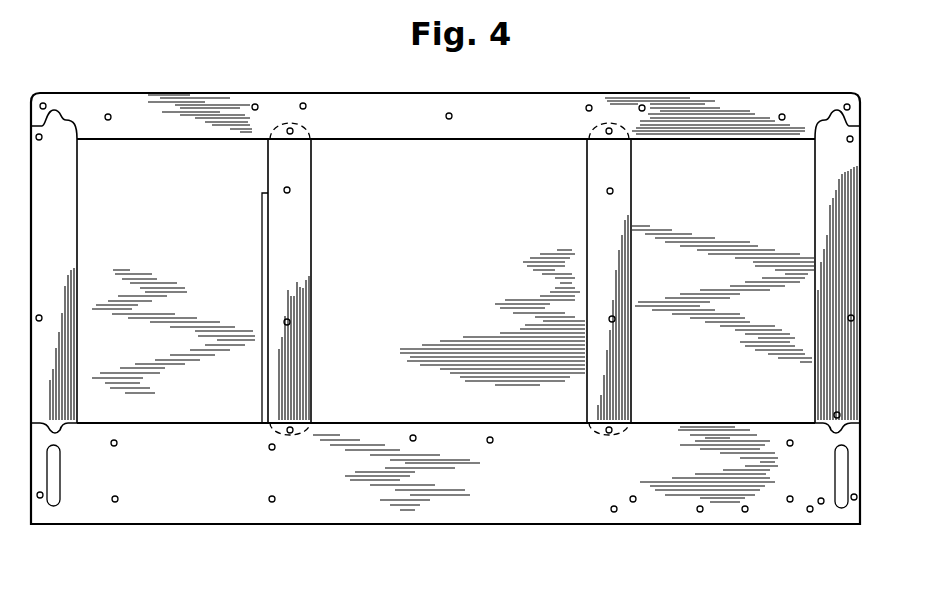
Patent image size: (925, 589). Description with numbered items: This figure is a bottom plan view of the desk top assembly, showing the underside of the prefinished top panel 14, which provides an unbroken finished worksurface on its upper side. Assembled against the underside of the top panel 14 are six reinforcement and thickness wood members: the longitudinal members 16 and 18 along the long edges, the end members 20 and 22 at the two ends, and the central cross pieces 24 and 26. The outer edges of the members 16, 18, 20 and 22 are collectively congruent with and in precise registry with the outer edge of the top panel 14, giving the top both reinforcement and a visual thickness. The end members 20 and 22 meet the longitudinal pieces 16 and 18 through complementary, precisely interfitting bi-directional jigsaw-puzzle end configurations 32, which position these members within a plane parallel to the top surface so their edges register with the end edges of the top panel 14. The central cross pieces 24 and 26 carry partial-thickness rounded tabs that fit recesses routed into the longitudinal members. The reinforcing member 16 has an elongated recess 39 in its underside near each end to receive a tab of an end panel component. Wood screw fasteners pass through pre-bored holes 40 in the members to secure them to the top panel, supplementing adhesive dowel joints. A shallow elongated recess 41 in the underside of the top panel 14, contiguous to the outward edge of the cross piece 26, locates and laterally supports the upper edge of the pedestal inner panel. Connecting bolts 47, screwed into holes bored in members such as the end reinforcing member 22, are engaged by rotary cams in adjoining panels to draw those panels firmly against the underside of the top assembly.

The top panel 14 is at (513, 302).
The longitudinal reinforcing member 16 is at (540, 436).
The longitudinal member 18 is at (461, 107).
The end member 20 is at (68, 244).
The end reinforcing member 22 is at (822, 219).
The central cross piece 24 is at (622, 275).
The central cross piece 26 is at (305, 272).
The jigsaw puzzle end configuration 32 is at (60, 118).
The elongated recess 39 is at (62, 493).
The pre-bored hole 40 is at (304, 104).
The shallow elongated recess 41 is at (262, 292).
The connecting bolt 47 is at (43, 138).